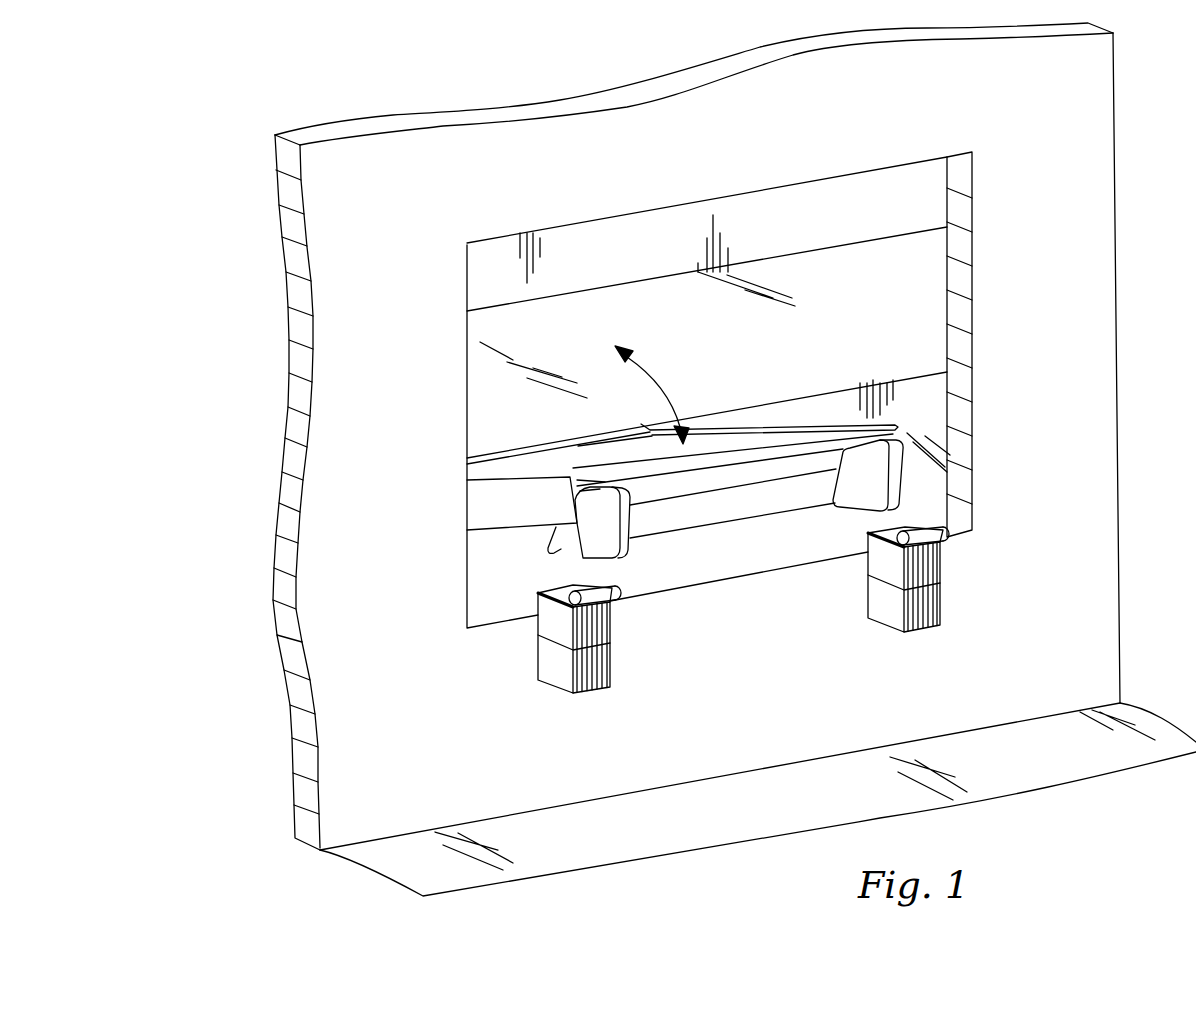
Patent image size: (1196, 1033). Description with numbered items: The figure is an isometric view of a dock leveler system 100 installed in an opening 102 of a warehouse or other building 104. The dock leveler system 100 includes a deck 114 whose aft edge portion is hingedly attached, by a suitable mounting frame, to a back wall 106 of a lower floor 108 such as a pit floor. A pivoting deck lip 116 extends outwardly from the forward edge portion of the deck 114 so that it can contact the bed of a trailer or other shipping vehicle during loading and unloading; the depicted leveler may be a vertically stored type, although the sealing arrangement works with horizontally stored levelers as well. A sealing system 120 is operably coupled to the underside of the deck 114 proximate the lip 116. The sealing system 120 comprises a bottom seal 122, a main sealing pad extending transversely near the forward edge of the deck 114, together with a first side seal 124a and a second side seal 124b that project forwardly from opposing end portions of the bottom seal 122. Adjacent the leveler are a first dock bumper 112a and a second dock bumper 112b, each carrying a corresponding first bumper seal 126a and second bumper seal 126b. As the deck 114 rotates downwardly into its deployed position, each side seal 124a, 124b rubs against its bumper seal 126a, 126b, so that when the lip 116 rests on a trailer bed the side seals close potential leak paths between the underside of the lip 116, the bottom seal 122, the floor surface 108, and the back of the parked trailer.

The dock leveler system 100 is at (557, 462).
The opening 102 is at (472, 297).
The building 104 is at (352, 190).
The back wall 106 is at (922, 396).
The lower floor 108 is at (973, 393).
The first dock bumper 112a is at (563, 673).
The second dock bumper 112b is at (940, 603).
The deck 114 is at (727, 433).
The deck lip 116 is at (790, 450).
The sealing system 120 is at (799, 522).
The bottom seal 122 is at (688, 517).
The first side seal 124a is at (582, 547).
The second side seal 124b is at (900, 478).
The first bumper seal 126a is at (620, 594).
The second bumper seal 126b is at (900, 547).